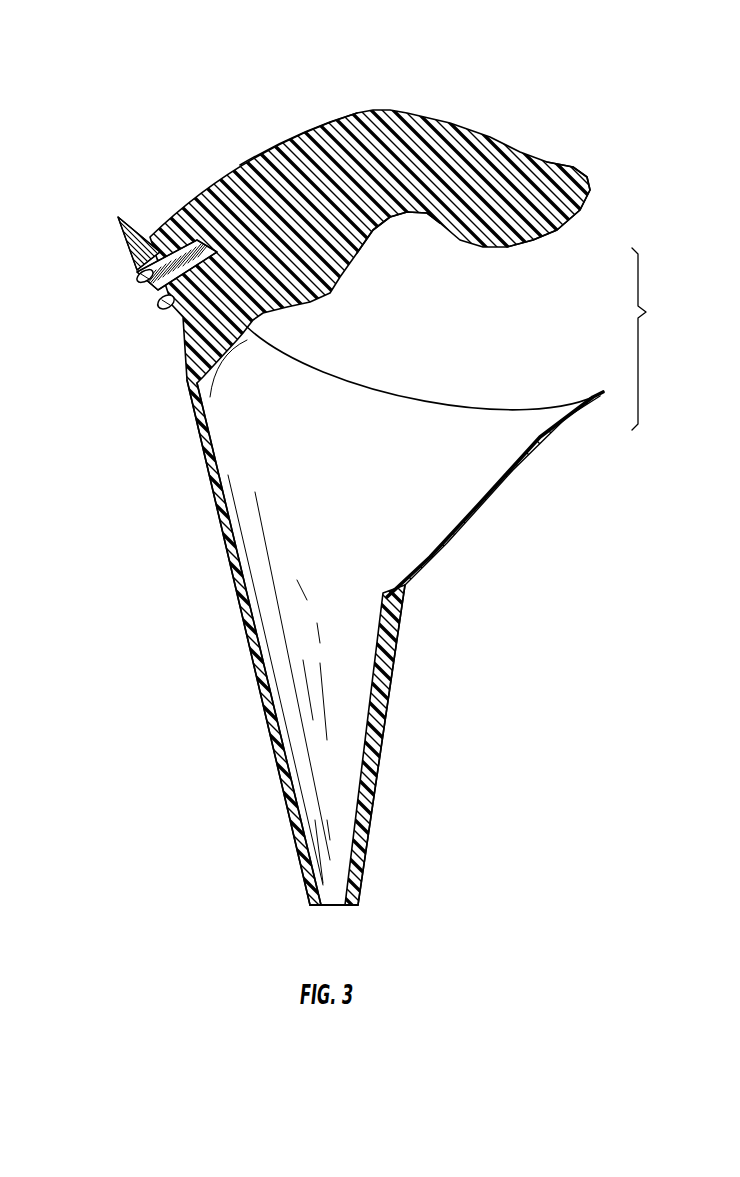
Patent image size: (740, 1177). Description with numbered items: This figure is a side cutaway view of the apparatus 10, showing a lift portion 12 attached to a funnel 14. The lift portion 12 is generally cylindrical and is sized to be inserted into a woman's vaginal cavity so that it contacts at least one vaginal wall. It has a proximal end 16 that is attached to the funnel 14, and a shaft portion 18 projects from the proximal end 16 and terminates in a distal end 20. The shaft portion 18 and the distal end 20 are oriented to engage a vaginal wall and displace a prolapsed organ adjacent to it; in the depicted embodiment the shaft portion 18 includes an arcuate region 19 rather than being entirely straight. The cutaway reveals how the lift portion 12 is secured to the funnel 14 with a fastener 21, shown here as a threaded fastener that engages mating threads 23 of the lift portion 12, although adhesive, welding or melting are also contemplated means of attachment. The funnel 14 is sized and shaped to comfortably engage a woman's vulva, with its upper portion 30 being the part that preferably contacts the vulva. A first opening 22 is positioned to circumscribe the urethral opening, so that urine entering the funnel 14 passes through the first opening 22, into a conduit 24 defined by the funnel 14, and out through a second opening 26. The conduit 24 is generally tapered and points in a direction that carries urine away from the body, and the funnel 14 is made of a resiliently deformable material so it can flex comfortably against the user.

The apparatus 10 is at (370, 482).
The lift portion 12 is at (377, 463).
The funnel 14 is at (357, 637).
The proximal end 16 is at (168, 240).
The shaft portion 18 is at (280, 153).
The arcuate region 19 is at (420, 213).
The distal end 20 is at (537, 229).
The fastener 21 is at (153, 303).
The first opening 22 is at (425, 437).
The mating threads 23 is at (198, 240).
The conduit 24 is at (353, 710).
The second opening 26 is at (337, 907).
The upper portion 30 is at (653, 339).